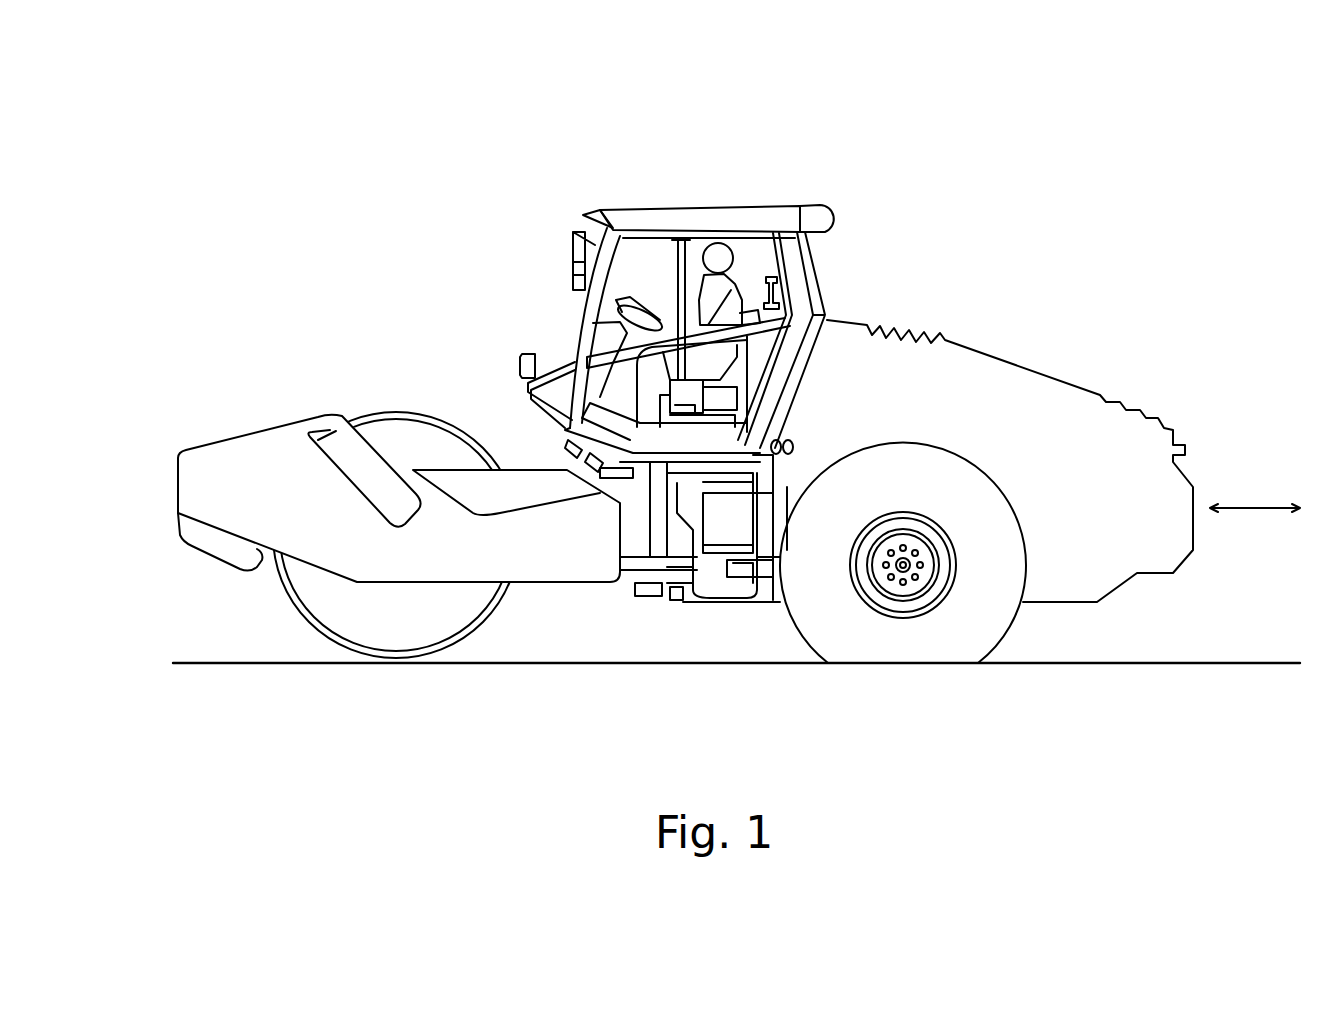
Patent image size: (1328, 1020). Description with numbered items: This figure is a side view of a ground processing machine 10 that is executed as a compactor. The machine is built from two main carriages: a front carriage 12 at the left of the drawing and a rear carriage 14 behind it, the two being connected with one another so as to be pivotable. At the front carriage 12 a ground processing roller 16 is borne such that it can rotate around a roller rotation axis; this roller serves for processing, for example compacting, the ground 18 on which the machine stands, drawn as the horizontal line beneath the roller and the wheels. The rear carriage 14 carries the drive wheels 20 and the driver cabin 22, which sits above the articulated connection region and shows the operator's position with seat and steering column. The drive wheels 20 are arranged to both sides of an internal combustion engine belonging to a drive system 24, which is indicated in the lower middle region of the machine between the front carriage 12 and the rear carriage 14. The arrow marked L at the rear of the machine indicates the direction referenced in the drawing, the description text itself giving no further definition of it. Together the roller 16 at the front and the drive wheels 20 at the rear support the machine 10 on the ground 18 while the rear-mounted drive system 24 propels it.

The ground processing machine 10 is at (744, 410).
The front carriage 12 is at (399, 446).
The rear carriage 14 is at (1030, 329).
The ground processing roller 16 is at (360, 414).
The ground 18 is at (205, 660).
The drive wheels 20 is at (1000, 620).
The driver cabin 22 is at (693, 212).
The drive system 24 is at (745, 612).
The longitudinal direction L is at (1311, 447).